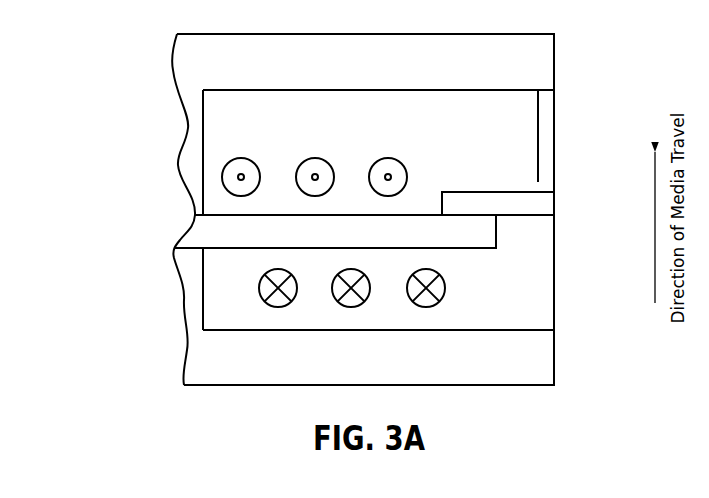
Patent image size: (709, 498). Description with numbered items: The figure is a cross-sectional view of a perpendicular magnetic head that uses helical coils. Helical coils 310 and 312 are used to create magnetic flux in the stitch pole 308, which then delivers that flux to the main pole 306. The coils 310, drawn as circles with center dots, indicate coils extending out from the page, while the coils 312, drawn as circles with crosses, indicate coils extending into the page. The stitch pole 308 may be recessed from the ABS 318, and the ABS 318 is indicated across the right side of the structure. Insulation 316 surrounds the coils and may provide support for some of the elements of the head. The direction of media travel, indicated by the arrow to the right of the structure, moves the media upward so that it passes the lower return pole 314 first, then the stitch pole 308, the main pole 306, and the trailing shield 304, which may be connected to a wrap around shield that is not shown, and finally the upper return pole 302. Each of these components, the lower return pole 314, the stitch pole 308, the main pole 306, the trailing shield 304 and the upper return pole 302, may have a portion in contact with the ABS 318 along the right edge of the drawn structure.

The upper return pole 302 is at (458, 73).
The trailing shield 304 is at (556, 138).
The main pole 306 is at (556, 197).
The stitch pole 308 is at (400, 243).
The helical coils 310 is at (240, 158).
The helical coils 312 is at (259, 292).
The lower return pole 314 is at (403, 369).
The insulation 316 is at (499, 151).
The ABS 318 is at (558, 53).